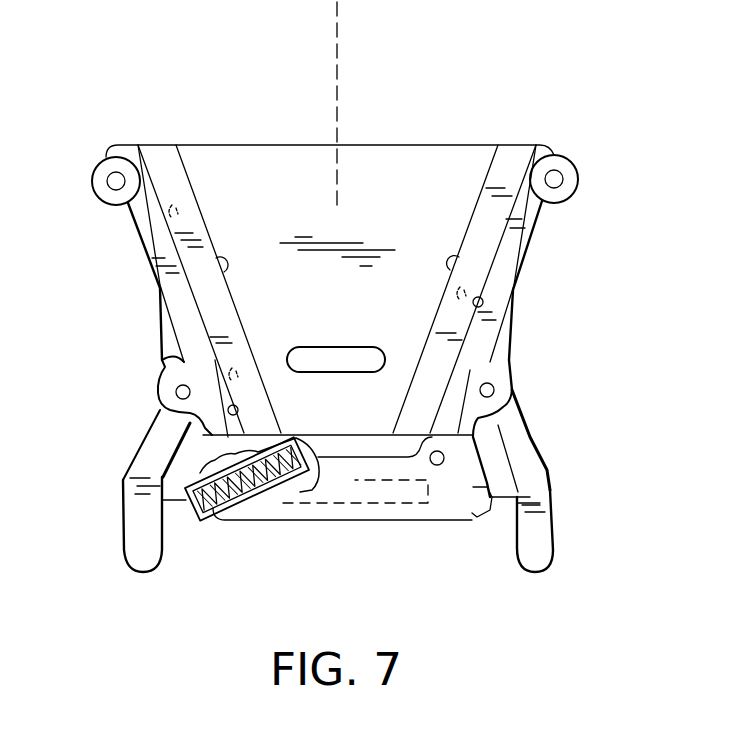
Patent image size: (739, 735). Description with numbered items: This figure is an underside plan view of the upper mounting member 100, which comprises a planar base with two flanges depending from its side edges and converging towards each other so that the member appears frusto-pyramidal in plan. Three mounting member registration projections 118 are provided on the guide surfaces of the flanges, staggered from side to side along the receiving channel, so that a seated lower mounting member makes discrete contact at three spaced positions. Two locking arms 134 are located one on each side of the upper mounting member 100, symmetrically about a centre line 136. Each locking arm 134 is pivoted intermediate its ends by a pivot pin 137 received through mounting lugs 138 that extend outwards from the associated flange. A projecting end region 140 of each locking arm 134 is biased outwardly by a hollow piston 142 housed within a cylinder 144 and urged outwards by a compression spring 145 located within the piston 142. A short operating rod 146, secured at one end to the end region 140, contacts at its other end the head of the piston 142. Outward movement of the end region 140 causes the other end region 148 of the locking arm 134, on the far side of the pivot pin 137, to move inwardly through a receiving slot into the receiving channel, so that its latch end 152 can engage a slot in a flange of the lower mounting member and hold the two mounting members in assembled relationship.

The upper mounting member 100 is at (462, 120).
The mounting member registration projections 118 is at (178, 206).
The locking arms 134 is at (147, 457).
The centre line 136 is at (337, 68).
The pivot pin 137 is at (176, 372).
The mounting lugs 138 is at (173, 391).
The projecting end region 140 is at (140, 538).
The hollow piston 142 is at (203, 520).
The cylinder 144 is at (313, 490).
The compression spring 145 is at (263, 487).
The operating rod 146 is at (180, 512).
The other end region 148 is at (163, 313).
The latch end 152 is at (226, 262).